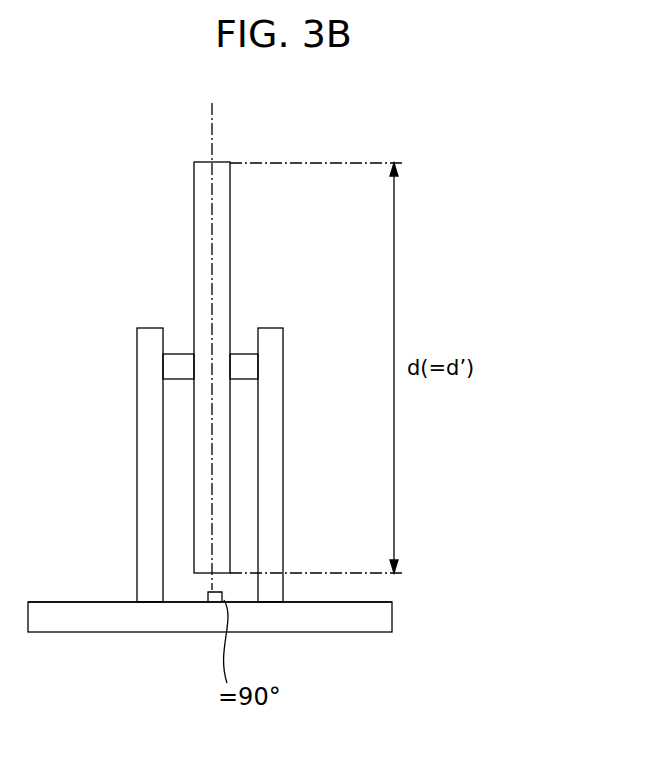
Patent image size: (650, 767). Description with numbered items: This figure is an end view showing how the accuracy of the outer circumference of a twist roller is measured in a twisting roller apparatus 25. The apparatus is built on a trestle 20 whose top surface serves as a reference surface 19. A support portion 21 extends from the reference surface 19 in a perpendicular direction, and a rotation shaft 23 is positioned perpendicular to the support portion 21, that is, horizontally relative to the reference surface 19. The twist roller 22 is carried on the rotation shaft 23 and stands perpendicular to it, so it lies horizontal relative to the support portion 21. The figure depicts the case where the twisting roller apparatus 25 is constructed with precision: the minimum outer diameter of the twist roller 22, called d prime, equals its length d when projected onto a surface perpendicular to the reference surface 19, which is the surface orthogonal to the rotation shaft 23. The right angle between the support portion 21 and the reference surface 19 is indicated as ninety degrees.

The reference surface 19 is at (350, 602).
The trestle 20 is at (378, 618).
The support portion 21 is at (147, 470).
The twist roller 22 is at (205, 205).
The rotation shaft 23 is at (180, 362).
The twisting roller apparatus 25 is at (276, 276).